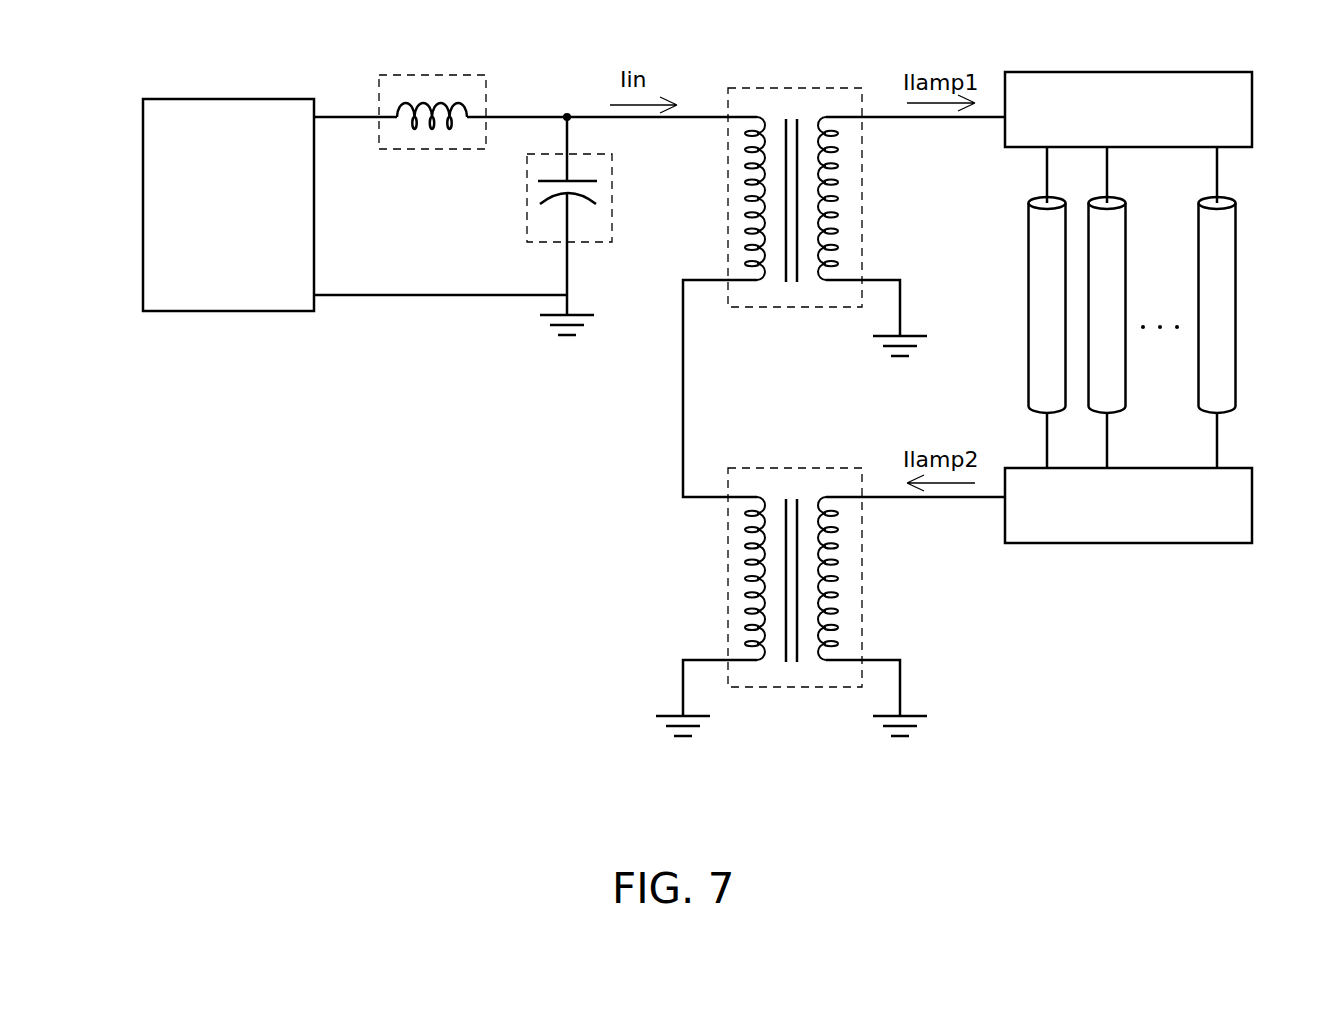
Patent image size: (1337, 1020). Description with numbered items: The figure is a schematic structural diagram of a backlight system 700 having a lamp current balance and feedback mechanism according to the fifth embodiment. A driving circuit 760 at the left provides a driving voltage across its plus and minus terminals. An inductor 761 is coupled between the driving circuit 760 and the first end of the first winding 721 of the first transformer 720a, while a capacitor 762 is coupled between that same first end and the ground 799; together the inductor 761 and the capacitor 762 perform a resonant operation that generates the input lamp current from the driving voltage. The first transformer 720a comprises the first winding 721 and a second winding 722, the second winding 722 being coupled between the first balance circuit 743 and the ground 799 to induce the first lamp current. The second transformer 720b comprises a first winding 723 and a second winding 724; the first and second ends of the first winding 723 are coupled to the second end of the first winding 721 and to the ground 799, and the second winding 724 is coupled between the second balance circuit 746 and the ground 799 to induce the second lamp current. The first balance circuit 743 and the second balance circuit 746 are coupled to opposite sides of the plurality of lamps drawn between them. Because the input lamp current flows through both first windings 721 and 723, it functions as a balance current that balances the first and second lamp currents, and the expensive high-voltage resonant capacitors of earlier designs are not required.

The backlight system 700 is at (438, 655).
The driving circuit 760 is at (256, 98).
The inductor 761 is at (470, 75).
The capacitor 762 is at (612, 225).
The ground 799 is at (608, 329).
The first transformer 720a is at (792, 181).
The second transformer 720b is at (792, 559).
The first winding 721 is at (743, 199).
The second winding 722 is at (822, 215).
The first winding 723 is at (743, 579).
The second winding 724 is at (822, 594).
The first balance circuit 743 is at (1220, 72).
The second balance circuit 746 is at (1220, 543).